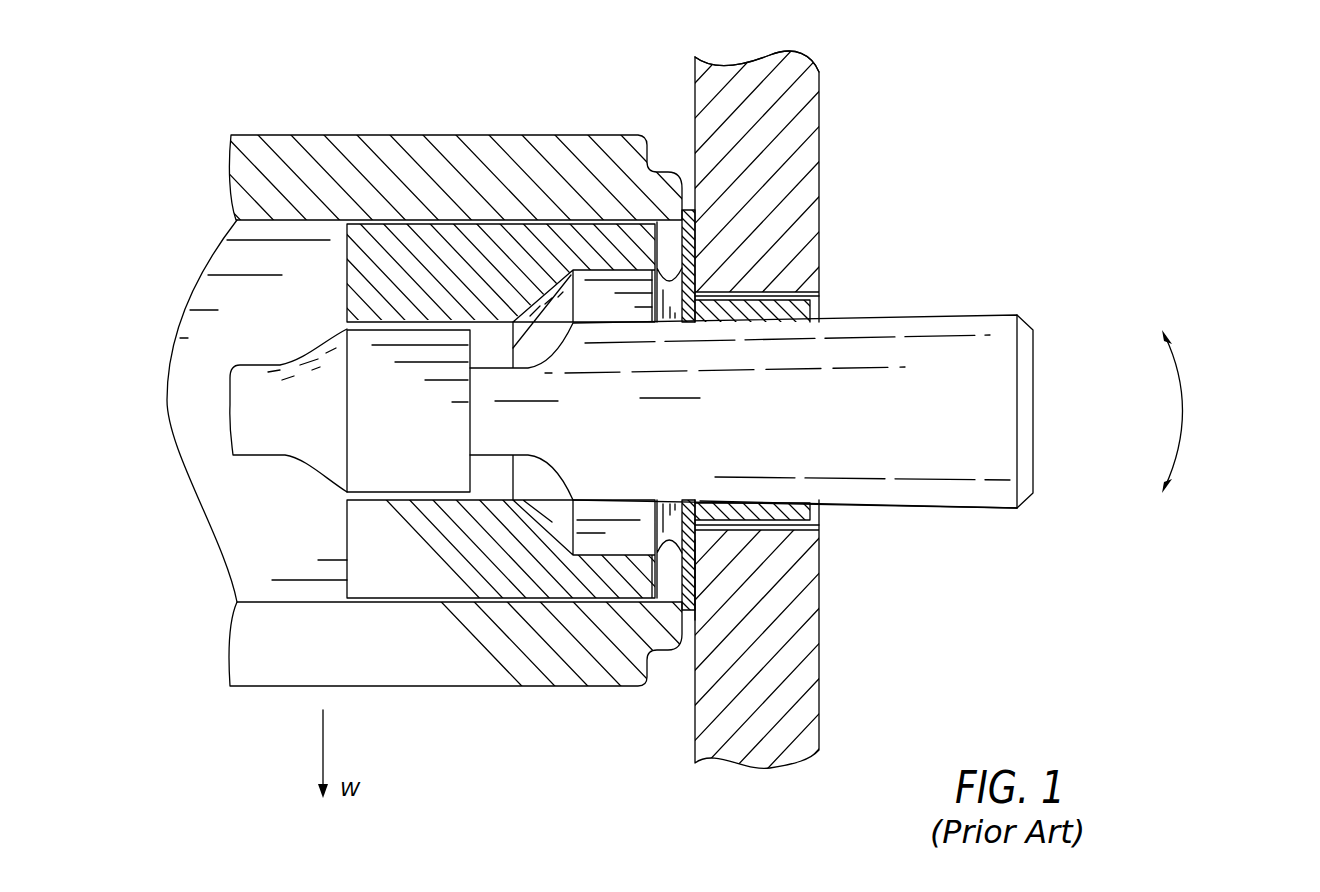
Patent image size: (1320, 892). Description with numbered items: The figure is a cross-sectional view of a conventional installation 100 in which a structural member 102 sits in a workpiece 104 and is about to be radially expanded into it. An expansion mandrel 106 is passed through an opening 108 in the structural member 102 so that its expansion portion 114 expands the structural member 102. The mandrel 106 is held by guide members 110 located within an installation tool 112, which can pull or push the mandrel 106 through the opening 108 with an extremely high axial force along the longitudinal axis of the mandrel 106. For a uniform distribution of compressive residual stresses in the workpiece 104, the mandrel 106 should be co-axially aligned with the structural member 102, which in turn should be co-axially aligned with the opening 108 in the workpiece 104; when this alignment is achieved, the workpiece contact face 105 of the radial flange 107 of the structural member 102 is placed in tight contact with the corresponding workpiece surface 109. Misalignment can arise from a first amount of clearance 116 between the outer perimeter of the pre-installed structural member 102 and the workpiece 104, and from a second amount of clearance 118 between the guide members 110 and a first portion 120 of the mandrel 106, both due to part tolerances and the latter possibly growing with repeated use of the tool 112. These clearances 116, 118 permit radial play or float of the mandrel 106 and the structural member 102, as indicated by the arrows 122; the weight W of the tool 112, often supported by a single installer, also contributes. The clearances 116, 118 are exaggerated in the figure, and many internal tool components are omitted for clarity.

The installation 100 is at (860, 83).
The structural member 102 is at (813, 312).
The workpiece 104 is at (824, 186).
The workpiece contact face 105 is at (695, 577).
The expansion mandrel 106 is at (1037, 458).
The radial flange 107 is at (690, 612).
The opening 108 is at (820, 510).
The workpiece surface 109 is at (693, 130).
The guide members 110 is at (485, 573).
The installation tool 112 is at (478, 110).
The expansion portion 114 is at (997, 315).
The first amount of clearance 116 is at (826, 296).
The second amount of clearance 118 is at (343, 500).
The first portion 120 is at (360, 457).
The arrows 122 is at (1185, 410).